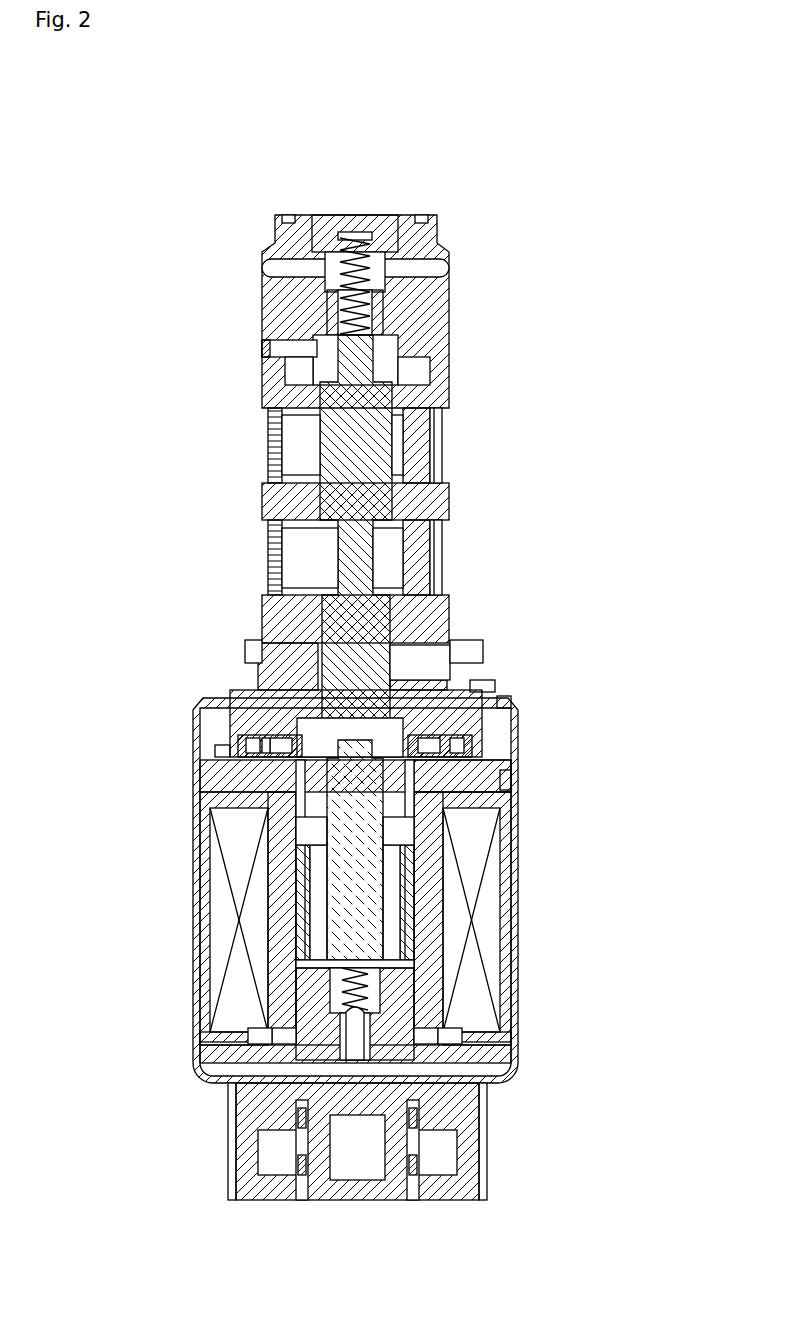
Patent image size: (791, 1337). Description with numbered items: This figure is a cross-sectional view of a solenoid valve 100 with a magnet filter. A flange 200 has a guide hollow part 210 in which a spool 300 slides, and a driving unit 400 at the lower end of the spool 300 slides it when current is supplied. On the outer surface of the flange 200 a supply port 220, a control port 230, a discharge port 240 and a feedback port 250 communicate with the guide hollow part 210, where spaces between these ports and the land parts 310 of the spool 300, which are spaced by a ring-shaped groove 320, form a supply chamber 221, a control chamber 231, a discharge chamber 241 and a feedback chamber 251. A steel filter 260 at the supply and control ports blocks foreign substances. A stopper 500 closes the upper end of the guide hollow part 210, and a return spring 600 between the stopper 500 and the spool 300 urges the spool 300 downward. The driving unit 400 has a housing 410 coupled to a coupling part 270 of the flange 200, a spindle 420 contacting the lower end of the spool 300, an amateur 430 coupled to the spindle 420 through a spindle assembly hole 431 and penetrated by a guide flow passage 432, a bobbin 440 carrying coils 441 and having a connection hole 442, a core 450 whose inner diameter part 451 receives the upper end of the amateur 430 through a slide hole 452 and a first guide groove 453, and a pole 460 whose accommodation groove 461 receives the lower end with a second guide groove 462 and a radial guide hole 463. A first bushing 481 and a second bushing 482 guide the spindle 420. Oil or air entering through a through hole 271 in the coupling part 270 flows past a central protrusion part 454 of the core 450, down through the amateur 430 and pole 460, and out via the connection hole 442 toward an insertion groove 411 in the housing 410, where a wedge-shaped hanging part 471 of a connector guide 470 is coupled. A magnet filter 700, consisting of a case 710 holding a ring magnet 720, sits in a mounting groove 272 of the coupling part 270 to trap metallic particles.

The solenoid valve 100 is at (237, 205).
The flange 200 is at (440, 307).
The guide hollow part 210 is at (405, 370).
The supply port 220 is at (445, 430).
The supply chamber 221 is at (398, 445).
The control port 230 is at (445, 542).
The control chamber 231 is at (388, 572).
The discharge port 240 is at (458, 652).
The discharge chamber 241 is at (252, 645).
The feedback port 250 is at (266, 342).
The feedback chamber 251 is at (300, 357).
The steel filter 260 is at (275, 412).
The coupling part 270 is at (240, 706).
The through hole 271 is at (505, 702).
The mounting groove 272 is at (258, 736).
The spool 300 is at (320, 548).
The land parts 310 is at (302, 443).
The ring-shaped groove 320 is at (292, 370).
The driving unit 400 is at (546, 849).
The housing 410 is at (450, 1004).
The insertion groove 411 is at (215, 1086).
The spindle 420 is at (272, 776).
The amateur 430 is at (392, 912).
The spindle assembly hole 431 is at (300, 832).
The guide flow passage 432 is at (408, 935).
The bobbin 440 is at (470, 796).
The coils 441 is at (232, 906).
The connection hole 442 is at (228, 1040).
The core 450 is at (435, 770).
The inner diameter part 451 is at (298, 812).
The slide hole 452 is at (320, 724).
The first guide groove 453 is at (228, 752).
The central protrusion part 454 is at (480, 684).
The pole 460 is at (436, 1060).
The accommodation groove 461 is at (340, 976).
The second guide groove 462 is at (450, 1038).
The guide hole 463 is at (346, 1015).
The connector guide 470 is at (470, 1193).
The hanging part 471 is at (482, 1098).
The first bushing 481 is at (506, 780).
The second bushing 482 is at (428, 1036).
The stopper 500 is at (372, 214).
The return spring 600 is at (312, 268).
The magnet filter 700 is at (254, 709).
The case 710 is at (252, 752).
The ring magnet 720 is at (250, 742).